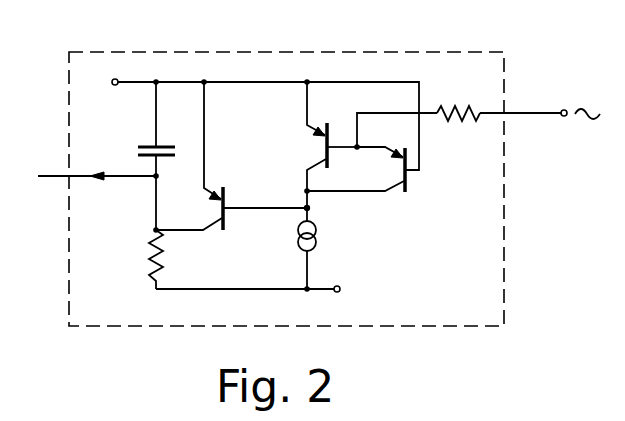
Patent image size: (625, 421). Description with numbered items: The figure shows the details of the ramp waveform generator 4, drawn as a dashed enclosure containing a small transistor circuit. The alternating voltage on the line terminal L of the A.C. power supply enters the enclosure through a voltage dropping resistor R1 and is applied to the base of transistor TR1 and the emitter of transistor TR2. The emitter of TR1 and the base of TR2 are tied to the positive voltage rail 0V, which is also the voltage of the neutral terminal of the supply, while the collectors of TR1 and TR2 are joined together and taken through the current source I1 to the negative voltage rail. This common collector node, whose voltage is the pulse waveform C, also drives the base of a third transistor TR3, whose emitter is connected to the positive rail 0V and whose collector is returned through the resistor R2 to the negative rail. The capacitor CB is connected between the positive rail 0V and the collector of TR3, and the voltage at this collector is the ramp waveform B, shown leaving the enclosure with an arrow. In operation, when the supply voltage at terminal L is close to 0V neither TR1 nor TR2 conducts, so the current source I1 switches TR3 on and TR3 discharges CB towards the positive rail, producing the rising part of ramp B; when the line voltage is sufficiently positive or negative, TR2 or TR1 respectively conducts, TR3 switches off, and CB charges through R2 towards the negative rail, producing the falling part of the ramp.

The ramp waveform generator 4 is at (408, 52).
The positive voltage rail 0V is at (95, 69).
The line terminal L is at (580, 128).
The ramp voltage waveform B is at (55, 178).
The pulse voltage waveform C is at (270, 207).
The capacitor CB is at (135, 148).
The voltage dropping resistor R1 is at (453, 126).
The resistor R2 is at (148, 258).
The transistor TR1 is at (322, 144).
The transistor TR2 is at (412, 185).
The transistor TR3 is at (228, 217).
The current source I1 is at (317, 237).